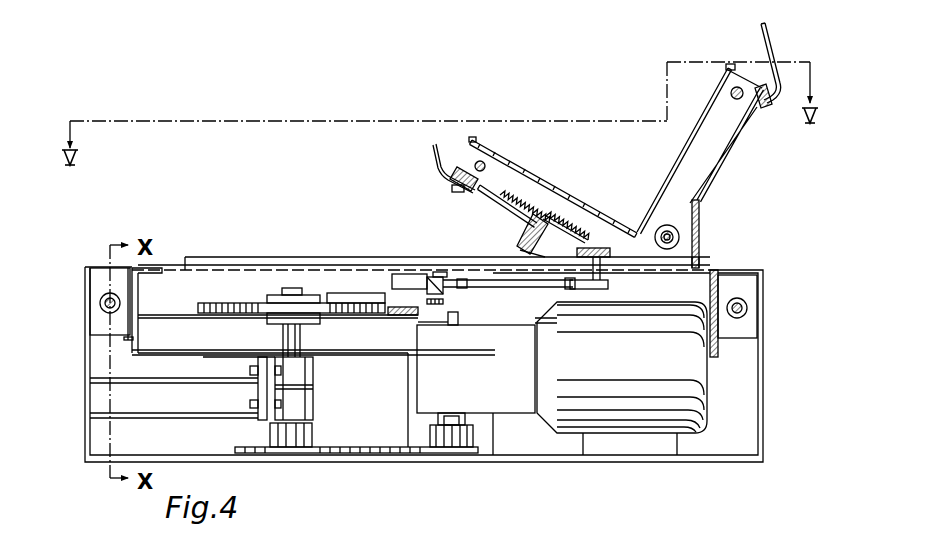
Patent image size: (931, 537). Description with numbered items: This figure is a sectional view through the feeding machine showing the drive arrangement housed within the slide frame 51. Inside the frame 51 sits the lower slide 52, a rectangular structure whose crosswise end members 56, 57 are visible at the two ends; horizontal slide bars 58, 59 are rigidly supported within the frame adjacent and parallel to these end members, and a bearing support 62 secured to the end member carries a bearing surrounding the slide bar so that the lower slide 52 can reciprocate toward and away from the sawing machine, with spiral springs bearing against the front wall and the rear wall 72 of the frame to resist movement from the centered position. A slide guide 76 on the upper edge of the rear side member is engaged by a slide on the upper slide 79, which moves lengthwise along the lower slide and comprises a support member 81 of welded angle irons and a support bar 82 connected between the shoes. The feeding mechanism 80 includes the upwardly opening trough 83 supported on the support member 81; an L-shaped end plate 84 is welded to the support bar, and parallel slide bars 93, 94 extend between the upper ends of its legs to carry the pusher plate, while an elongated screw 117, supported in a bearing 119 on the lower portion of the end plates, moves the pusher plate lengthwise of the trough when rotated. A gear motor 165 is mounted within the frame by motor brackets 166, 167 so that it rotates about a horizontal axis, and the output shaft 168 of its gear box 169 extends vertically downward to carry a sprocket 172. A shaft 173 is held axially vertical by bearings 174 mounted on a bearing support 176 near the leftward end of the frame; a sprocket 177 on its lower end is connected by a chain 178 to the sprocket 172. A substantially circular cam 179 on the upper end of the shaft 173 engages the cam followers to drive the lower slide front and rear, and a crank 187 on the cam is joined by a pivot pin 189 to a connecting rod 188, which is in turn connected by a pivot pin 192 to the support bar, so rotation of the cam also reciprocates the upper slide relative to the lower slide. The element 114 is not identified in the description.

The frame 51 is at (86, 392).
The lower slide 52 is at (287, 257).
The end member 56 is at (140, 292).
The end member 57 is at (702, 285).
The slide bar 58 is at (102, 300).
The slide bar 59 is at (746, 306).
The bearing support 62 is at (100, 326).
The rear wall 72 is at (100, 363).
The slide guide 76 is at (366, 263).
The upper slide 79 is at (518, 236).
The feeding mechanism 80 is at (734, 153).
The support member 81 is at (515, 212).
The support bar 82 is at (612, 248).
The trough 83 is at (527, 169).
The end plate 84 is at (558, 200).
The slide bar 93 is at (733, 90).
The slide bar 94 is at (483, 161).
The wire lever 114 is at (768, 43).
The screw 117 is at (680, 234).
The bearing 119 is at (660, 228).
The gear motor 165 is at (687, 423).
The motor bracket 166 is at (485, 428).
The motor bracket 167 is at (606, 447).
The output shaft 168 is at (457, 413).
The gear box 169 is at (476, 362).
The sprocket 172 is at (445, 440).
The shaft 173 is at (295, 347).
The bearing 174 is at (305, 403).
The bearing support 176 is at (262, 418).
The sprocket 177 is at (287, 437).
The chain 178 is at (357, 452).
The cam 179 is at (245, 302).
The crank 187 is at (365, 293).
The connecting rod 188 is at (537, 287).
The pivot pin 189 is at (441, 281).
The pivot pin 192 is at (603, 270).